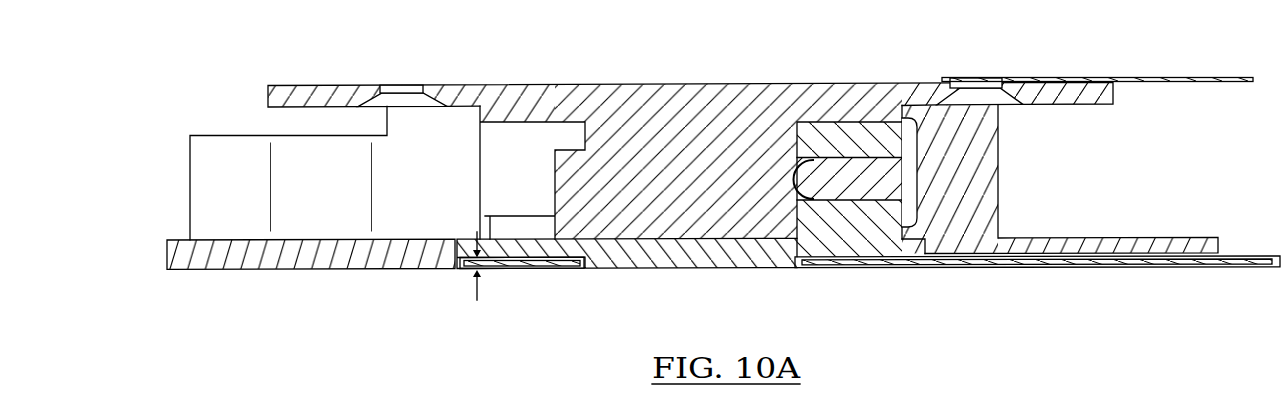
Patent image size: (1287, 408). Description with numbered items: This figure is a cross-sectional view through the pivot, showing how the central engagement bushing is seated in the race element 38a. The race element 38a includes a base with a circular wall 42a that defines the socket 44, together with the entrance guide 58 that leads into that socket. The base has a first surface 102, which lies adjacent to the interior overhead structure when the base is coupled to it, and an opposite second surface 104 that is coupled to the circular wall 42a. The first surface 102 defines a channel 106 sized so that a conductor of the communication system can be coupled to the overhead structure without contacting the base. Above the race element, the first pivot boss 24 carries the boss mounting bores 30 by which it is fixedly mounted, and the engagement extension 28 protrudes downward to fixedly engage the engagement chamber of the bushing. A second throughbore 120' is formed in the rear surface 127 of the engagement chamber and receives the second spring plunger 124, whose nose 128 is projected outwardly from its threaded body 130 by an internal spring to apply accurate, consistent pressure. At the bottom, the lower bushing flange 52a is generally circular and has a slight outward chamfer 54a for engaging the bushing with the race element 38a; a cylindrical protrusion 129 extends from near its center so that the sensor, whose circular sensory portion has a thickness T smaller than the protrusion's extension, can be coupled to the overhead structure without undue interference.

The first pivot boss 24 is at (297, 78).
The engagement extension 28 is at (552, 176).
The boss mounting bores 30 is at (405, 86).
The entrance guide 58 is at (213, 136).
The second surface 104 is at (222, 240).
The first surface 102 is at (282, 270).
The race element 38a is at (642, 278).
The cylindrical protrusion 129 is at (595, 270).
The thickness T is at (478, 280).
The second spring plunger 124 is at (868, 150).
The threaded body 130 is at (845, 163).
The rear surface 127 is at (797, 153).
The second throughbore 120' is at (849, 274).
The circular wall 42a is at (998, 192).
The outward chamfer 54a is at (932, 248).
The socket 44 is at (907, 175).
The nose 128 is at (818, 268).
The channel 106 is at (865, 263).
The lower bushing flange 52a is at (980, 267).